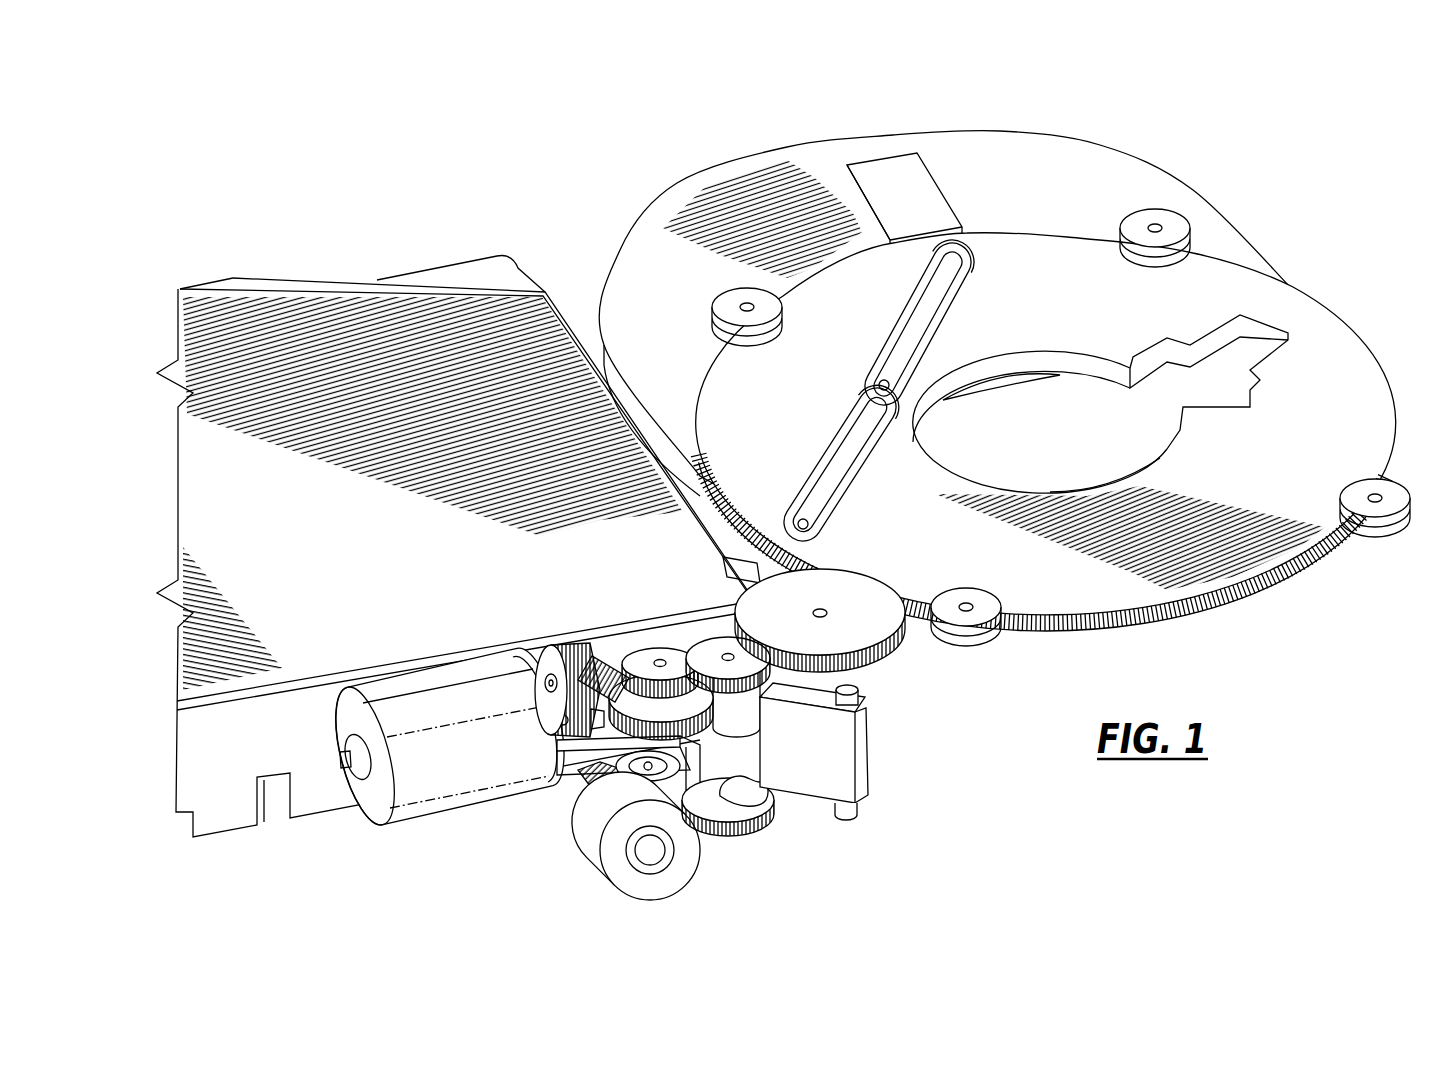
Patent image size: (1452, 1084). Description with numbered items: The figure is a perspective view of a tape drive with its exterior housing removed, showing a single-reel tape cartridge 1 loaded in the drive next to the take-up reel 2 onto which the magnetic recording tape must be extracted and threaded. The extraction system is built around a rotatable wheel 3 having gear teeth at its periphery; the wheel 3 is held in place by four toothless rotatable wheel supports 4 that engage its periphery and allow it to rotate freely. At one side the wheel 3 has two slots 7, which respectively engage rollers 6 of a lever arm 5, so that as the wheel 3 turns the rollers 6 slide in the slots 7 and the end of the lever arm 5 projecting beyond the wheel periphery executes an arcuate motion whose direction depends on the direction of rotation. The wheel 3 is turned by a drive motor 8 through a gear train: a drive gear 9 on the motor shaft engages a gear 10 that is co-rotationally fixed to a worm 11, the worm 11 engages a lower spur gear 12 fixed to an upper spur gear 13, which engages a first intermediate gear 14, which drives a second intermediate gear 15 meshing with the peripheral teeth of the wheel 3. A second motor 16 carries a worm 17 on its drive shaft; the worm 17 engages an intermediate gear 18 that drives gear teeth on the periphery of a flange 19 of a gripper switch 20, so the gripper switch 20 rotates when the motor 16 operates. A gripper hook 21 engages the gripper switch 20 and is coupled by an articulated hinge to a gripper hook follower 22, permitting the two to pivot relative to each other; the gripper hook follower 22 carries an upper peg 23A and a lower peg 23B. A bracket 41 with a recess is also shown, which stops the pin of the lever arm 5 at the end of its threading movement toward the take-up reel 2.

The single-reel tape cartridge 1 is at (207, 297).
The take-up reel 2 is at (1096, 137).
The rotatable wheel 3 is at (1046, 432).
The rotatable wheel supports 4 is at (733, 300).
The lever arm 5 is at (770, 568).
The rollers 6 is at (929, 340).
The slots 7 is at (964, 261).
The drive motor 8 is at (415, 797).
The drive gear 9 is at (580, 750).
The gear 10 is at (543, 655).
The worm 11 is at (583, 663).
The lower spur gear 12 is at (615, 690).
The upper spur gear 13 is at (660, 648).
The first intermediate gear 14 is at (700, 648).
The second intermediate gear 15 is at (853, 593).
The motor 16 is at (587, 840).
The worm 17 is at (573, 773).
The intermediate gear 18 is at (713, 820).
The flange 19 is at (750, 813).
The gripper switch 20 is at (762, 838).
The gripper hook 21 is at (744, 724).
The gripper hook follower 22 is at (875, 766).
The upper peg 23A is at (858, 697).
The lower peg 23B is at (850, 817).
The bracket 41 is at (912, 192).